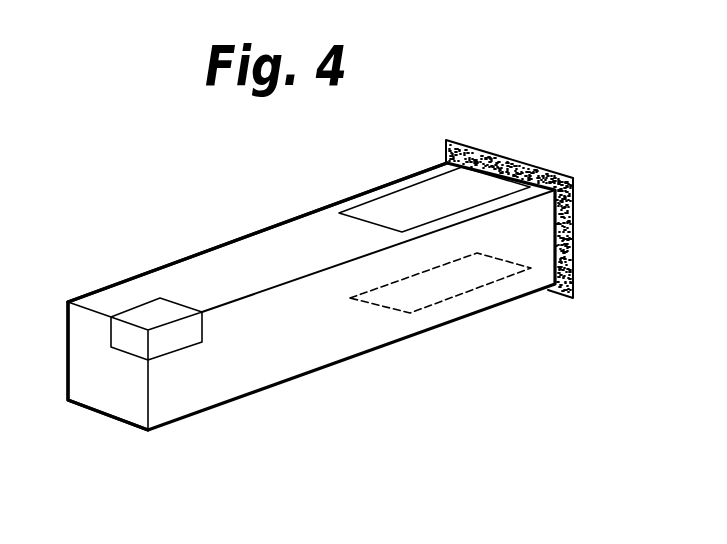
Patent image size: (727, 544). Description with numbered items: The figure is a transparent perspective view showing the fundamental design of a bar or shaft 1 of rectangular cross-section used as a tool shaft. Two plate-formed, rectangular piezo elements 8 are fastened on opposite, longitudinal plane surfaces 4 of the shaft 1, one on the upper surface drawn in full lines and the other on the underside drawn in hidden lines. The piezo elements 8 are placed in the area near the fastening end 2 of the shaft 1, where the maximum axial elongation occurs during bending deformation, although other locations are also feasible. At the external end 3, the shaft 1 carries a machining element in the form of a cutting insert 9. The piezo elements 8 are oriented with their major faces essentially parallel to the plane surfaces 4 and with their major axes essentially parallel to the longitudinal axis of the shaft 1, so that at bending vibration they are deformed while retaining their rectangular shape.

The shaft 1 is at (285, 221).
The fastening end 2 is at (535, 243).
The external end 3 is at (98, 378).
The plane surfaces 4 is at (222, 262).
The piezo elements 8 is at (407, 203).
The cutting insert 9 is at (150, 310).